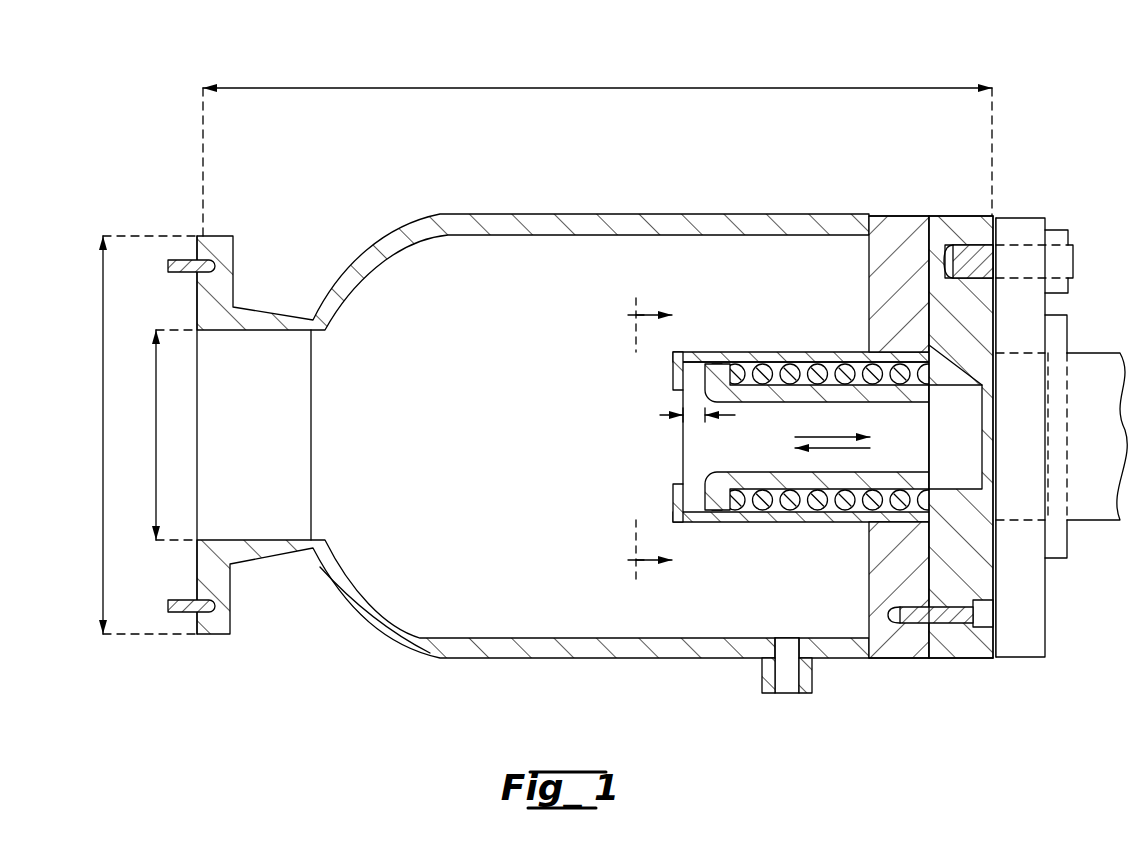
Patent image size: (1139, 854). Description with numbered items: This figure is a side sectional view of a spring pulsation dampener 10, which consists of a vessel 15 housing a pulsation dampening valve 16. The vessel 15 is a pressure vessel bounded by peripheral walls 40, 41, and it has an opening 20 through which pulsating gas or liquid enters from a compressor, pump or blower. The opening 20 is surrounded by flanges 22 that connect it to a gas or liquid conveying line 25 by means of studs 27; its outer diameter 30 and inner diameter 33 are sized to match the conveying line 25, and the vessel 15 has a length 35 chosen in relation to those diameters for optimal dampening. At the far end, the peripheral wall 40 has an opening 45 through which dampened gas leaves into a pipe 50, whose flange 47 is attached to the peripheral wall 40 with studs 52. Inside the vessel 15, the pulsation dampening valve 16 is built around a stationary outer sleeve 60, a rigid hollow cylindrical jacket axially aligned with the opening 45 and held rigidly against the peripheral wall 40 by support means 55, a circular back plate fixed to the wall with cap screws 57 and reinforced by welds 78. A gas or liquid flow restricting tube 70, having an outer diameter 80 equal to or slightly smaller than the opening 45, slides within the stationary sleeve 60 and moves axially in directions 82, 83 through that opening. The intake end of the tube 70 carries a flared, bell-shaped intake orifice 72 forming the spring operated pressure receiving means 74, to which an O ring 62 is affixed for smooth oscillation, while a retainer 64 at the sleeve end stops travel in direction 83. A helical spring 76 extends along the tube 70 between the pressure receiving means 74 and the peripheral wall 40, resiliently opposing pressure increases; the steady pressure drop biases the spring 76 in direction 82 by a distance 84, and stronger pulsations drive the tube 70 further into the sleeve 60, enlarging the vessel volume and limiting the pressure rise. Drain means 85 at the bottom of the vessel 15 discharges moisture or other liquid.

The pulsation dampener 10 is at (714, 188).
The vessel 15 is at (402, 223).
The pulsation dampening valve 16 is at (758, 338).
The opening 20 is at (228, 415).
The flanges 22 is at (240, 625).
The gas or liquid conveying line 25 is at (132, 636).
The studs 27 is at (172, 262).
The outer diameter 30 is at (103, 412).
The inner diameter 33 is at (152, 476).
The length 35 is at (550, 86).
The peripheral wall 40 is at (958, 660).
The peripheral wall 41 is at (556, 660).
The opening 45 is at (994, 438).
The flange 47 is at (1015, 660).
The pipe 50 is at (1083, 352).
The studs 52 is at (975, 217).
The support means 55 is at (912, 217).
The cap screws 57 is at (890, 610).
The stationary outer sleeve 60 is at (793, 352).
The O ring 62 is at (726, 352).
The retainer 64 is at (672, 500).
The gas or liquid flow restricting tube 70 is at (748, 472).
The intake orifice 72 is at (683, 446).
The spring operated pressure receiving means 74 is at (690, 524).
The spring 76 is at (790, 524).
The welds 78 is at (866, 352).
The outer diameter 80 is at (966, 454).
The direction 82 is at (802, 440).
The direction 83 is at (870, 450).
The distance 84 is at (672, 404).
The drain means 85 is at (767, 698).